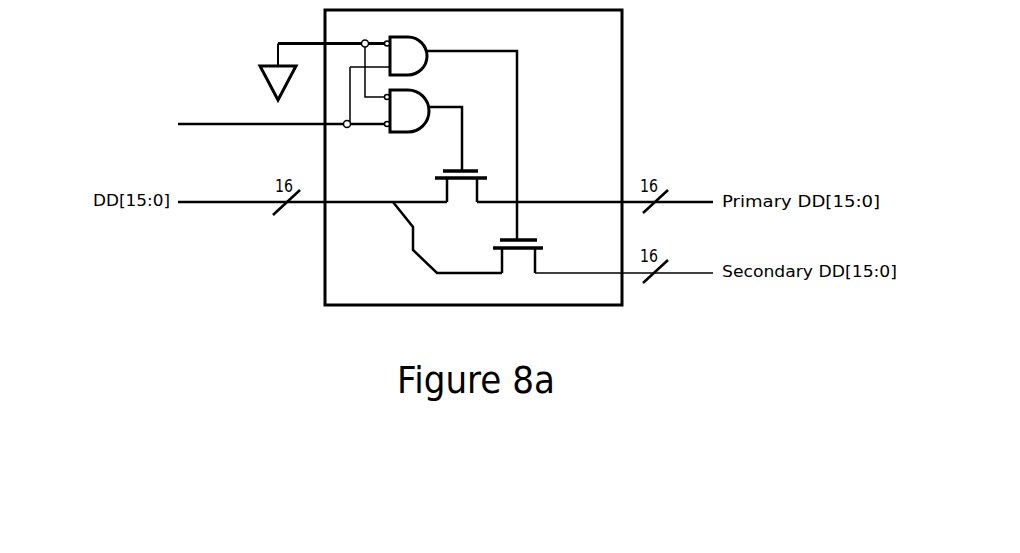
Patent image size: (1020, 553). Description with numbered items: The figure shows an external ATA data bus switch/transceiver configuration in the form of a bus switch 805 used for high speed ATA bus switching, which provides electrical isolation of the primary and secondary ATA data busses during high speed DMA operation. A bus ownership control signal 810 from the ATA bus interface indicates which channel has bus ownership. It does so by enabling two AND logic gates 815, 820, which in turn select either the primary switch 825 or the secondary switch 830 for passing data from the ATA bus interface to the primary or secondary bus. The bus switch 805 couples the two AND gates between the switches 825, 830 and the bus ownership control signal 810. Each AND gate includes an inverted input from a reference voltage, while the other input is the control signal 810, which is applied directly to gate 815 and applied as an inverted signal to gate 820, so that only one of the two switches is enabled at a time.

The bus switch 805 is at (473, 157).
The bus ownership control signal 810 is at (212, 134).
The logic gate 815 is at (398, 37).
The logic gate 820 is at (398, 90).
The primary switch 825 is at (461, 196).
The secondary switch 830 is at (518, 268).